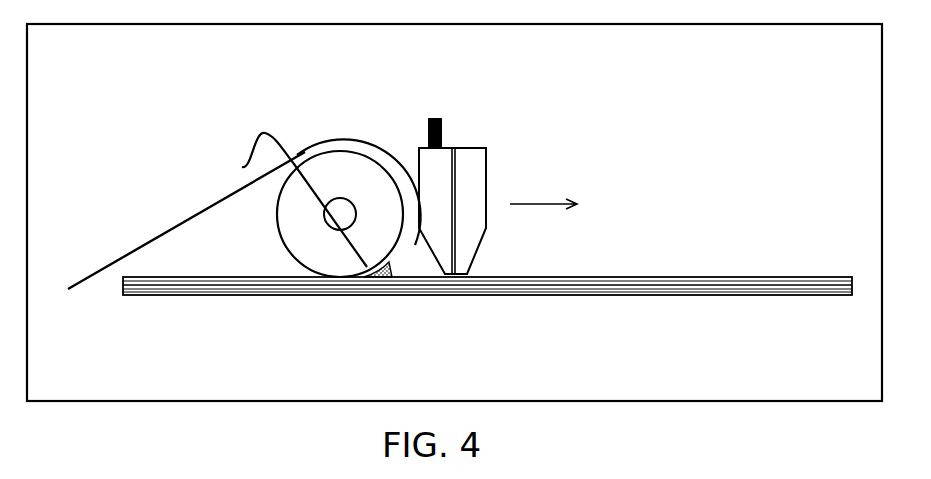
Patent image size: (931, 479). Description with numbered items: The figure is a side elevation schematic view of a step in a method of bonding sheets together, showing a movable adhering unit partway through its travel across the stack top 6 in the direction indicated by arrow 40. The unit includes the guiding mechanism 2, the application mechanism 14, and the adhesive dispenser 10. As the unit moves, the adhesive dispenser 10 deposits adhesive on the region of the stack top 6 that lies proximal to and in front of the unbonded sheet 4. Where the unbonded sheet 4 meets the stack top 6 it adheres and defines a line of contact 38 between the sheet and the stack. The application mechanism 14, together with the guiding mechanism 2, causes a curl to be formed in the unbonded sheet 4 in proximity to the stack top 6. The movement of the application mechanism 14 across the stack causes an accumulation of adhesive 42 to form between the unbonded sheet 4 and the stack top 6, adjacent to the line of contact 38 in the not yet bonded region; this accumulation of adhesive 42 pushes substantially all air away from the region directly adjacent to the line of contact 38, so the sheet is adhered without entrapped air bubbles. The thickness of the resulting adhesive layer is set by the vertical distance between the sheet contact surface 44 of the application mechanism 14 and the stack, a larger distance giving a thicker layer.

The guiding mechanism 2 is at (337, 136).
The unbonded sheet 4 is at (166, 225).
The stack top 6 is at (695, 277).
The adhesive dispenser 10 is at (487, 143).
The application mechanism 14 is at (325, 268).
The line of contact 38 is at (362, 285).
The arrow 40 is at (553, 200).
The accumulation of adhesive 42 is at (390, 268).
The sheet contact surface 44 is at (242, 167).